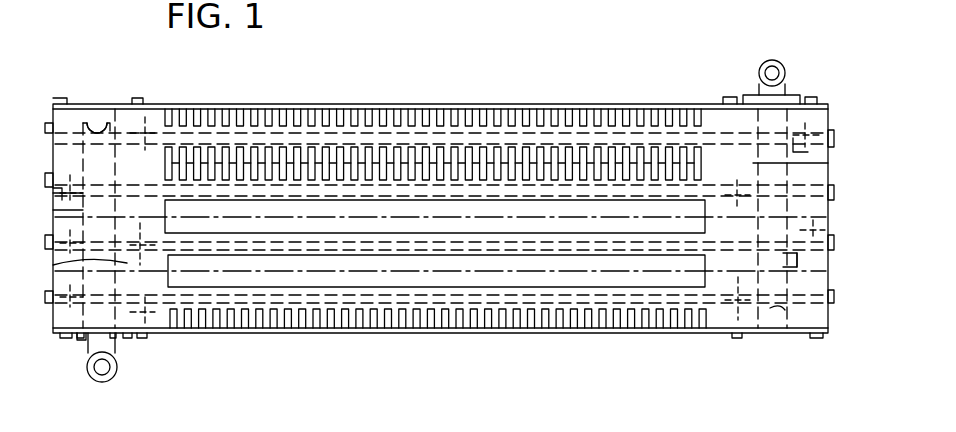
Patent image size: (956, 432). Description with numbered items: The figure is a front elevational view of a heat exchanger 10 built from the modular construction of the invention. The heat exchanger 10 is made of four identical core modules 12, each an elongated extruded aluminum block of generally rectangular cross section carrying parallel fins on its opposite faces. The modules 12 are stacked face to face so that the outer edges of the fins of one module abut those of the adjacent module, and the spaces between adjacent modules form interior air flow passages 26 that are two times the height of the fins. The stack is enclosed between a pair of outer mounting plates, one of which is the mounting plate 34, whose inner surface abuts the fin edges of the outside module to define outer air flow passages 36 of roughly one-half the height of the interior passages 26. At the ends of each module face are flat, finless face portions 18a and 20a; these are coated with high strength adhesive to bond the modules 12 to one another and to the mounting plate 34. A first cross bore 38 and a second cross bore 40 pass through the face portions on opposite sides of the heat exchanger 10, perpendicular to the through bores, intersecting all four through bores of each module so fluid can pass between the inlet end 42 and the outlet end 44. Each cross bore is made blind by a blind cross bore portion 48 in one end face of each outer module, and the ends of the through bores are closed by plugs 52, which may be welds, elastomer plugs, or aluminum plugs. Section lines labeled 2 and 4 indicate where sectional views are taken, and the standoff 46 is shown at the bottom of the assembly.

The heat exchanger 10 is at (821, 345).
The core module 12 is at (127, 175).
The flat face portion 18a is at (713, 103).
The flat face portion 20a is at (753, 168).
The interior air flow passage 26 is at (572, 150).
The outer mounting plate 34 is at (251, 333).
The outer air flow passage 36 is at (368, 118).
The first cross bore 38 is at (787, 262).
The second cross bore 40 is at (50, 193).
The inlet end 42 is at (100, 383).
The outlet end 44 is at (783, 78).
The standoff 46 is at (80, 343).
The blind cross bore portion 48 is at (86, 122).
The plug 52 is at (45, 122).
The section line 2- 2 is at (628, 53).
The section line 4- 4 is at (197, 193).